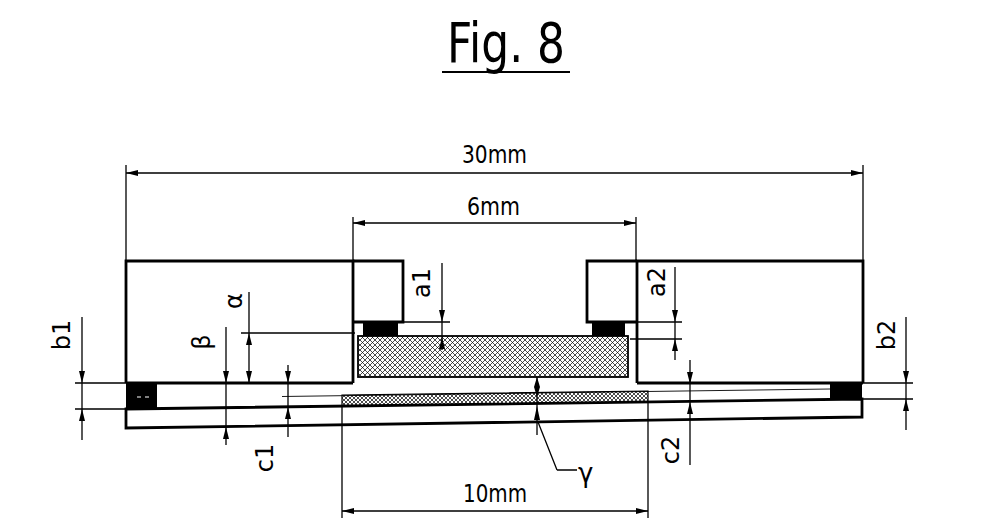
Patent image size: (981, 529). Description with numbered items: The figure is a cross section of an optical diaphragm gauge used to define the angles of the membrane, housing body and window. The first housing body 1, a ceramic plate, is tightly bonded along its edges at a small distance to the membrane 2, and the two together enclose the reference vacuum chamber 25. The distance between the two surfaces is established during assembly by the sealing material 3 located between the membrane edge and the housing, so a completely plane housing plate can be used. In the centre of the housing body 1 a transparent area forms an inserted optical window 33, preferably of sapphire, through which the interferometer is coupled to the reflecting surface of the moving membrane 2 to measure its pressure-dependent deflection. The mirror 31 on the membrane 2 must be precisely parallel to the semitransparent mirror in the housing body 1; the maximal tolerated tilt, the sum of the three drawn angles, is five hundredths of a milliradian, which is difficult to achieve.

The first housing body 1 is at (807, 327).
The membrane 2 is at (744, 408).
The sealing material 3 is at (127, 381).
The reference vacuum chamber 25 is at (172, 397).
The mirror 31 is at (433, 407).
The optical window 33 is at (485, 355).